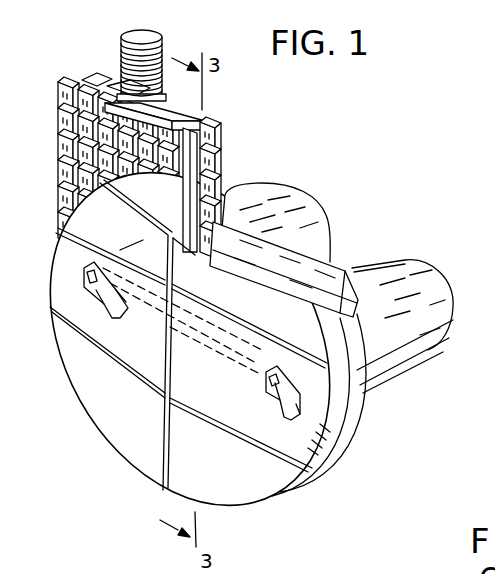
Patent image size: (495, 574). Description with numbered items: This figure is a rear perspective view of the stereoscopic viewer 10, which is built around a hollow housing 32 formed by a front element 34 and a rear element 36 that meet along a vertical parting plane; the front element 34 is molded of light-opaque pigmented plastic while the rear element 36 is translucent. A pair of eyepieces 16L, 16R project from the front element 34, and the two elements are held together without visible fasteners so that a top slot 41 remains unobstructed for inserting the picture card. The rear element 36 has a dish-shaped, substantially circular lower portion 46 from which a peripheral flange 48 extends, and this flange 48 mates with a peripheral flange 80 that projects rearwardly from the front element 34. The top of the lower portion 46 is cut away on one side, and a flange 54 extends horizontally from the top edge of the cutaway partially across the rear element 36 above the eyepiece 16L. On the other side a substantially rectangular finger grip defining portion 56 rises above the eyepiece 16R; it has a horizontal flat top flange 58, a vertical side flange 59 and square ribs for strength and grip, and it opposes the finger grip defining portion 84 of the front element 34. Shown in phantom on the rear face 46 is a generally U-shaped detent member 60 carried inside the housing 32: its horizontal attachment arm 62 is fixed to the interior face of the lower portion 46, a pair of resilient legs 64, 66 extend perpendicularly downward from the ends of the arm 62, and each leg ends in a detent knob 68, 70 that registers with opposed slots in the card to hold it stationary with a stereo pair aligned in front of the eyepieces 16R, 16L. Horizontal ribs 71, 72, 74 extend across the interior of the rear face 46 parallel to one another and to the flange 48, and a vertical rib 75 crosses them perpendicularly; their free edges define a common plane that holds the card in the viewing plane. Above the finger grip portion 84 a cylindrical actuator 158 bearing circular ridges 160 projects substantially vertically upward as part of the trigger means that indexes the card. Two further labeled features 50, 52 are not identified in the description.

The stereoscopic viewer 10 is at (345, 164).
The eyepiece 16R is at (255, 182).
The eyepiece 16L is at (440, 352).
The hollow housing 32 is at (261, 510).
The front element 34 is at (353, 427).
The rear element 36 is at (97, 431).
The top slot 41 is at (324, 266).
The lower portion 46 is at (151, 414).
The peripheral flange 48 is at (328, 450).
The disc edge 50 is at (137, 460).
The block stack base 52 is at (61, 239).
The flange 54 is at (340, 283).
The finger grip defining portion 56 is at (57, 106).
The horizontal flat top flange 58 is at (160, 100).
The vertical side flange 59 is at (58, 150).
The detent member 60 is at (288, 364).
The horizontal attachment arm 62 is at (193, 347).
The resilient leg 64 is at (95, 300).
The resilient leg 66 is at (266, 410).
The detent knob 68 is at (132, 318).
The detent knob 70 is at (300, 421).
The horizontal rib 71 is at (141, 212).
The horizontal rib 72 is at (101, 236).
The horizontal rib 74 is at (96, 343).
The vertical rib 75 is at (167, 449).
The peripheral flange 80 is at (364, 385).
The finger grip defining portion 84 is at (205, 130).
The cylindrical actuator 158 is at (172, 37).
The circular ridges 160 is at (118, 63).